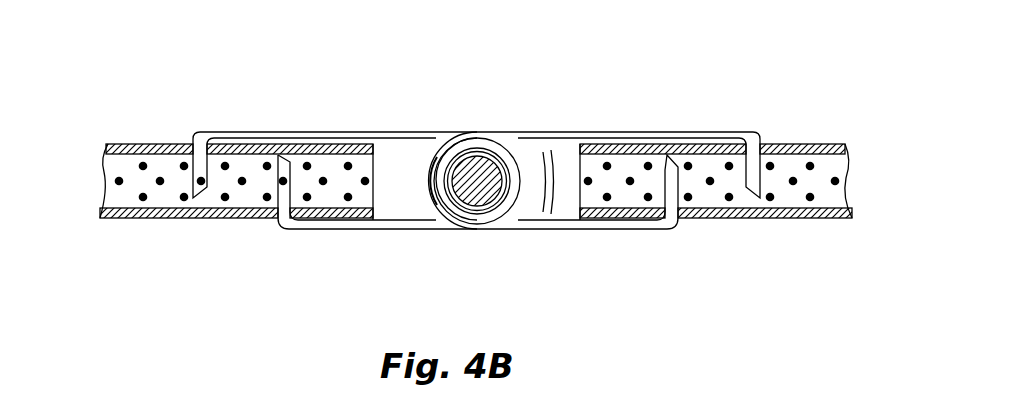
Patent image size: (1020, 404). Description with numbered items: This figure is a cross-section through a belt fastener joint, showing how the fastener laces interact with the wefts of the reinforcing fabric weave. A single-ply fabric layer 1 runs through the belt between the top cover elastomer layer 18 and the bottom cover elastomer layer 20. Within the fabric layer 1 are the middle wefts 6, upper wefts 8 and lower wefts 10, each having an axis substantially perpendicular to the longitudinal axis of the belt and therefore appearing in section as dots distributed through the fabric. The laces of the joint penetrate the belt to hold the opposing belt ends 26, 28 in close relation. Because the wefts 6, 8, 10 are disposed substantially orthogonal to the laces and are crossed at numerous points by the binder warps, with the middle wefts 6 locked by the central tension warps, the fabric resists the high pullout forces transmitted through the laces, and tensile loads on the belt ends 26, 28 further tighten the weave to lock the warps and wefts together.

The fabric layer 1 is at (100, 200).
The middle wefts 6 is at (242, 186).
The upper wefts 8 is at (145, 160).
The lower wefts 10 is at (143, 202).
The top cover elastomer layer 18 is at (117, 144).
The bottom cover elastomer layer 20 is at (112, 218).
The belt end 26 is at (378, 183).
The belt end 28 is at (578, 183).